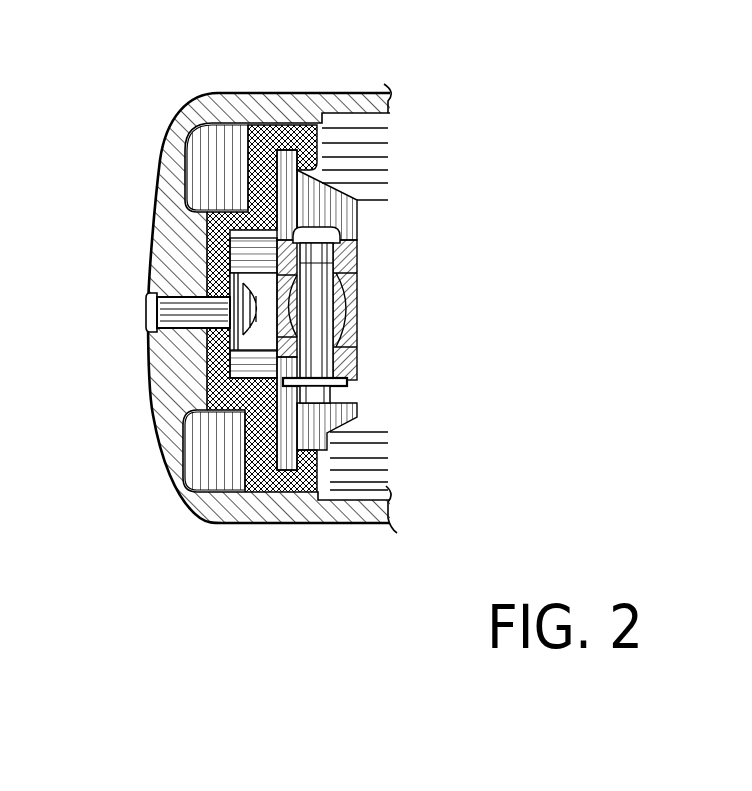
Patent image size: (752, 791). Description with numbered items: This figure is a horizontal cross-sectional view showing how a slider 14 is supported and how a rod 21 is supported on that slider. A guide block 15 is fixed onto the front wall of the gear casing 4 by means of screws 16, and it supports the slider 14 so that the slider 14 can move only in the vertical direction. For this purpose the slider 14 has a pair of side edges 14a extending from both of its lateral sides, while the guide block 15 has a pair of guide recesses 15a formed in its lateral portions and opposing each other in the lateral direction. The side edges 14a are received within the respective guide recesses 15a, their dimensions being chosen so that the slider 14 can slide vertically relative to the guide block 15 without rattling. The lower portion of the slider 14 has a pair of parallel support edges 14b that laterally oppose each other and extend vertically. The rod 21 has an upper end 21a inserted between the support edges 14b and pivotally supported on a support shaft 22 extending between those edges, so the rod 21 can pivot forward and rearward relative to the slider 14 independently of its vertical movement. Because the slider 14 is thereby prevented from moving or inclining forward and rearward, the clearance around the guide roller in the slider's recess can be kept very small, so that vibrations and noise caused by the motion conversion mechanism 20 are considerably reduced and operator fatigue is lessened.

The gear casing 4 is at (153, 398).
The slider 14 is at (355, 200).
The side edges 14a is at (334, 113).
The support edges 14b is at (357, 257).
The guide block 15 is at (245, 168).
The guide recesses 15a is at (262, 135).
The screws 16 is at (147, 307).
The motion conversion mechanism 20 is at (386, 287).
The rod 21 is at (381, 315).
The upper end 21a is at (357, 320).
The support shaft 22 is at (230, 351).